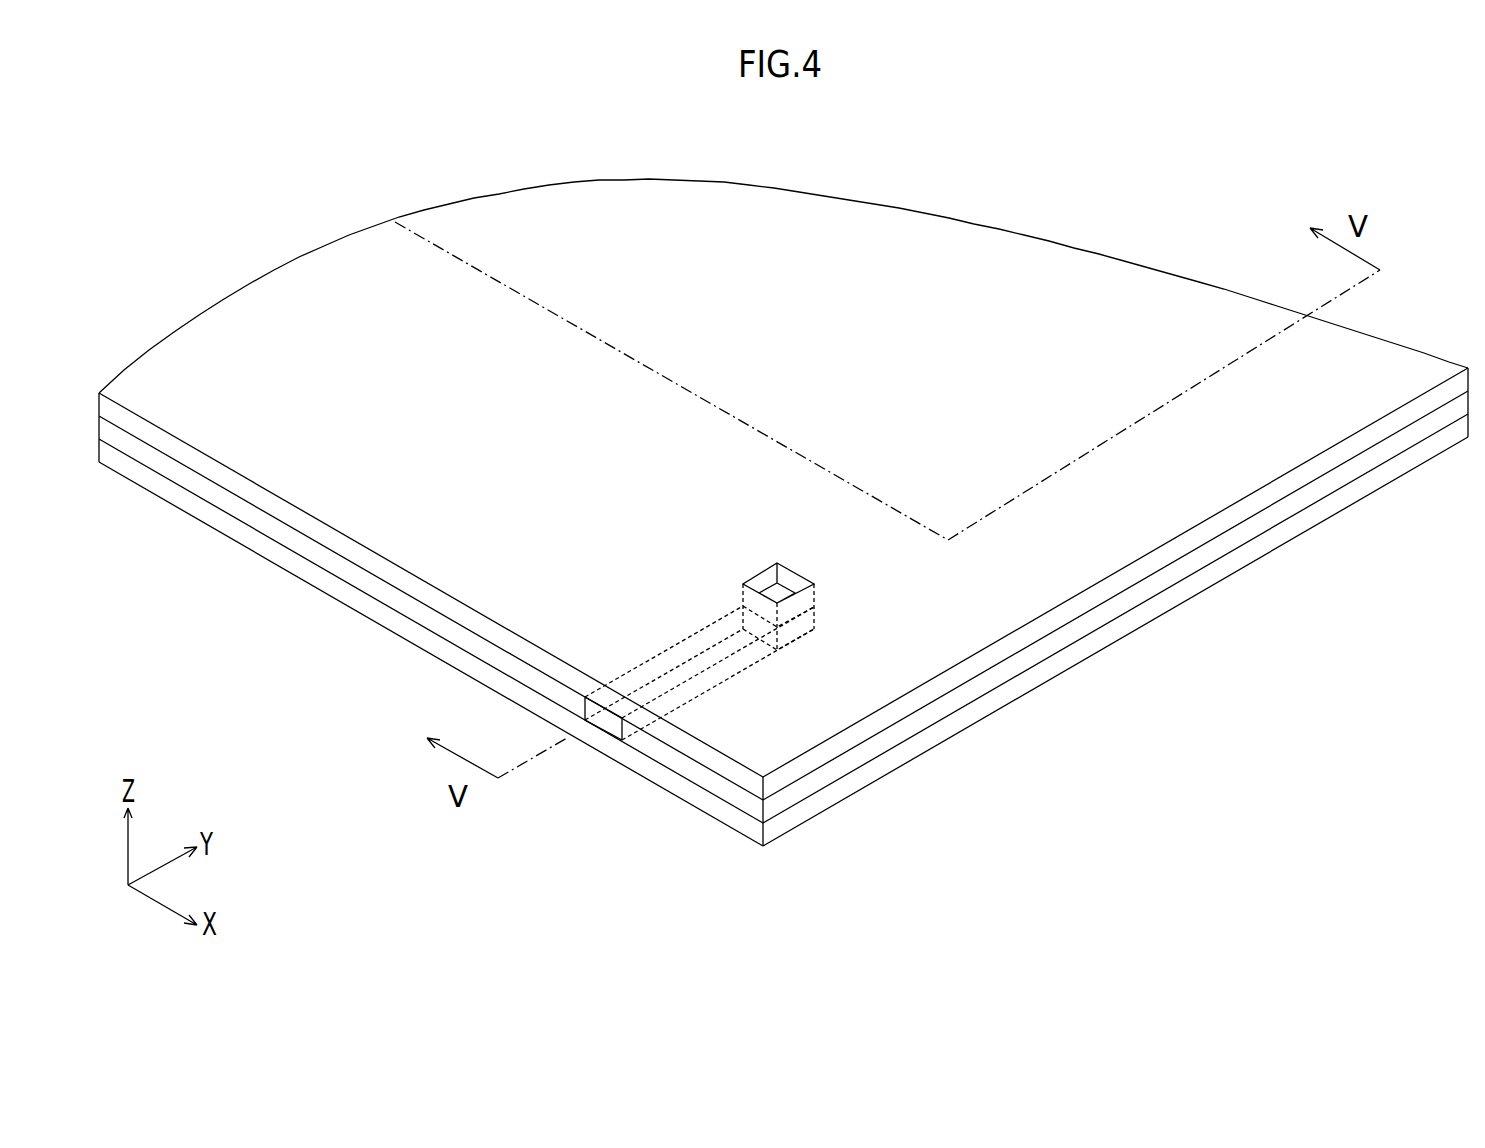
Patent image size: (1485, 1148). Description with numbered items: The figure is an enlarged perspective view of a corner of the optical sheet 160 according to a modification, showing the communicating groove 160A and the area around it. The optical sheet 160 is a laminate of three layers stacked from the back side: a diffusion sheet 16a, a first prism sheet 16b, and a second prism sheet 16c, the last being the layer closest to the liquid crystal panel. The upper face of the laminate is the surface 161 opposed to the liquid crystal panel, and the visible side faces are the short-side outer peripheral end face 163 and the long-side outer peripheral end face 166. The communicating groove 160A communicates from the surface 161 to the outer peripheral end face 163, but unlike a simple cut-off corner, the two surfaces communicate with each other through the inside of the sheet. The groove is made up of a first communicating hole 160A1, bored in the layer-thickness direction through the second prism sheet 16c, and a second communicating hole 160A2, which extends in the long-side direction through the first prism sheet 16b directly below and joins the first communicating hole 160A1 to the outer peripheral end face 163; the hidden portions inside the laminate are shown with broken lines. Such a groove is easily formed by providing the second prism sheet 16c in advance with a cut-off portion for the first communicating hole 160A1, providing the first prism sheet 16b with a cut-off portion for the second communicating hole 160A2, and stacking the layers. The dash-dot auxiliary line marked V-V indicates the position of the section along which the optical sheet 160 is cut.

The optical sheet 160 is at (267, 222).
The surface opposed to the liquid crystal panel 161 is at (197, 363).
The outer peripheral end face 163 is at (298, 537).
The outer peripheral end face 166 is at (1048, 643).
The diffusion sheet 16a is at (1343, 497).
The first prism sheet 16b is at (1280, 512).
The second prism sheet 16c is at (1177, 548).
The communicating groove 160A is at (686, 761).
The first communicating hole 160A1 is at (773, 583).
The second communicating hole 160A2 is at (603, 722).